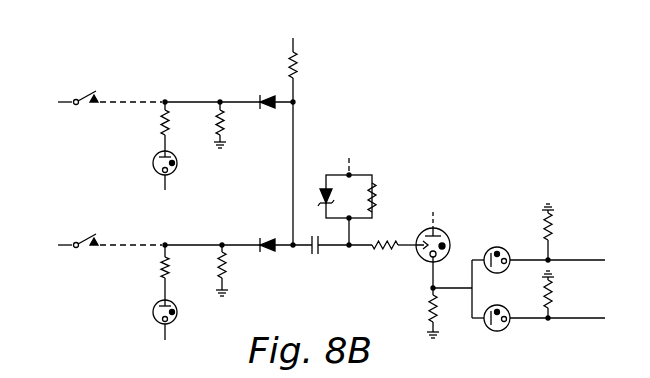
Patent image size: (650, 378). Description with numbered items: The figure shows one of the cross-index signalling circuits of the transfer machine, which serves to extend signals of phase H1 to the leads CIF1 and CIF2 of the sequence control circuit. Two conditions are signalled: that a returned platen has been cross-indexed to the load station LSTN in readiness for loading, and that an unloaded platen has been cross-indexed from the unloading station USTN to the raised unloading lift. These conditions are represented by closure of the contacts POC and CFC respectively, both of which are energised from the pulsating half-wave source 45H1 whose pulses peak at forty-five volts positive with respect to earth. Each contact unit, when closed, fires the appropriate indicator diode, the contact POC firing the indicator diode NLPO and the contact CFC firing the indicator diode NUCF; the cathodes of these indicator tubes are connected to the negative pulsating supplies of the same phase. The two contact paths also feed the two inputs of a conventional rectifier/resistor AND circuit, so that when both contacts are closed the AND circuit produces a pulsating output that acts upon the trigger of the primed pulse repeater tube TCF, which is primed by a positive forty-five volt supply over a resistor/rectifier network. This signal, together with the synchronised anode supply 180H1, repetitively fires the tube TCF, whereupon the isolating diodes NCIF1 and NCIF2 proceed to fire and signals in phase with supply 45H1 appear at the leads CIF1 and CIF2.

The half-wave rectified supply 45H1 is at (47, 173).
The unloading station USTN is at (108, 85).
The contact CFC is at (100, 106).
The loading station LSTN is at (109, 265).
The contact POC is at (98, 252).
The indicator diode NUCF is at (182, 138).
The indicator diode NLPO is at (184, 285).
The half-wave rectified anode supply 180H1 is at (436, 212).
The pulse repeater tube TCF is at (444, 279).
The isolating diode NCIF2 is at (493, 270).
The isolating diode NCIF1 is at (493, 328).
The lead CIF2 is at (573, 236).
The lead CIF1 is at (573, 298).